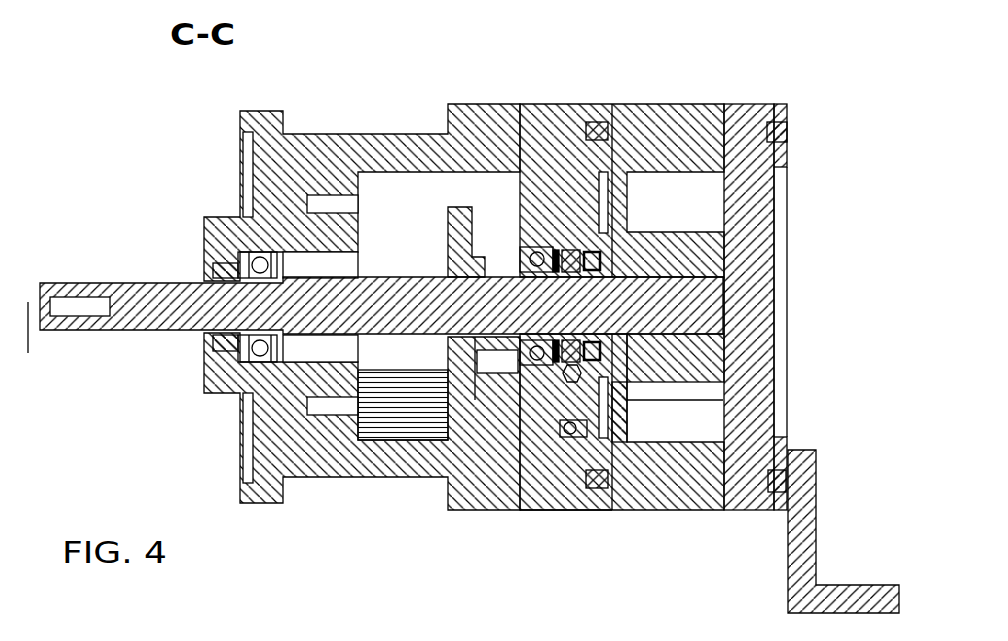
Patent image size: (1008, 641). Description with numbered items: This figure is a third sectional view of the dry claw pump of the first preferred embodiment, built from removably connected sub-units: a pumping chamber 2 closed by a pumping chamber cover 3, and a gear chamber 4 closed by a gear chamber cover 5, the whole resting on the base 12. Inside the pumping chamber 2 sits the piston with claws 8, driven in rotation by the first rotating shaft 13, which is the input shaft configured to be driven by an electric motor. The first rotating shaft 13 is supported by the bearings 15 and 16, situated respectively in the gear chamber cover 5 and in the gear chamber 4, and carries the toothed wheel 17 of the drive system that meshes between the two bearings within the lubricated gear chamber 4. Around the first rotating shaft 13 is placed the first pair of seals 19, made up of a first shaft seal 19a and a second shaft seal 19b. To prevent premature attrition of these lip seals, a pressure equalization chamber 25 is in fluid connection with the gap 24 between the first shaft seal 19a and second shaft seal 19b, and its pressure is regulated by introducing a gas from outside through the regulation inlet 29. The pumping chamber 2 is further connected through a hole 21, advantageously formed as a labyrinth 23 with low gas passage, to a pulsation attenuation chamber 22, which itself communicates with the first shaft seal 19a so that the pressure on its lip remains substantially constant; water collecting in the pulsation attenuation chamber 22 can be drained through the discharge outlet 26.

The pumping chamber 2 is at (686, 177).
The pumping chamber cover 3 is at (773, 187).
The gear chamber 4 is at (378, 359).
The gear chamber cover 5 is at (562, 498).
The piston with claws 8 is at (724, 250).
The base 12 is at (868, 585).
The first rotating shaft 13 is at (128, 282).
The bearing 15 is at (480, 352).
The bearing 16 is at (248, 366).
The toothed wheel 17 is at (454, 220).
The first pair of seals 19 is at (733, 0).
The first shaft seal 19a is at (610, 232).
The second shaft seal 19b is at (569, 254).
The hole 21 is at (629, 433).
The pulsation attenuation chamber 22 is at (577, 505).
The labyrinth 23 is at (758, 320).
The gap 24 is at (563, 357).
The pressure equalization chamber 25 is at (690, 372).
The discharge outlet 26 is at (562, 440).
The regulation inlet 29 is at (547, 360).